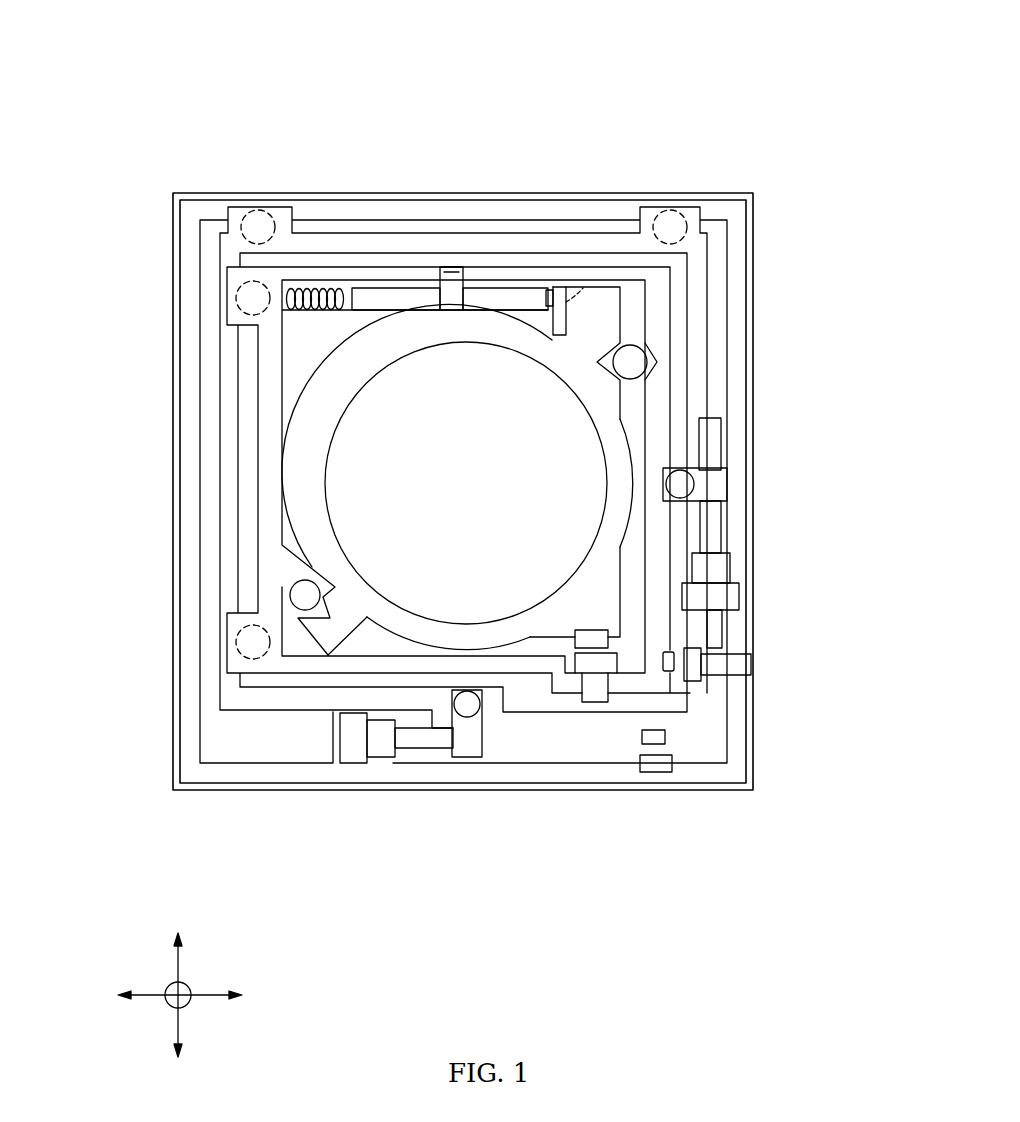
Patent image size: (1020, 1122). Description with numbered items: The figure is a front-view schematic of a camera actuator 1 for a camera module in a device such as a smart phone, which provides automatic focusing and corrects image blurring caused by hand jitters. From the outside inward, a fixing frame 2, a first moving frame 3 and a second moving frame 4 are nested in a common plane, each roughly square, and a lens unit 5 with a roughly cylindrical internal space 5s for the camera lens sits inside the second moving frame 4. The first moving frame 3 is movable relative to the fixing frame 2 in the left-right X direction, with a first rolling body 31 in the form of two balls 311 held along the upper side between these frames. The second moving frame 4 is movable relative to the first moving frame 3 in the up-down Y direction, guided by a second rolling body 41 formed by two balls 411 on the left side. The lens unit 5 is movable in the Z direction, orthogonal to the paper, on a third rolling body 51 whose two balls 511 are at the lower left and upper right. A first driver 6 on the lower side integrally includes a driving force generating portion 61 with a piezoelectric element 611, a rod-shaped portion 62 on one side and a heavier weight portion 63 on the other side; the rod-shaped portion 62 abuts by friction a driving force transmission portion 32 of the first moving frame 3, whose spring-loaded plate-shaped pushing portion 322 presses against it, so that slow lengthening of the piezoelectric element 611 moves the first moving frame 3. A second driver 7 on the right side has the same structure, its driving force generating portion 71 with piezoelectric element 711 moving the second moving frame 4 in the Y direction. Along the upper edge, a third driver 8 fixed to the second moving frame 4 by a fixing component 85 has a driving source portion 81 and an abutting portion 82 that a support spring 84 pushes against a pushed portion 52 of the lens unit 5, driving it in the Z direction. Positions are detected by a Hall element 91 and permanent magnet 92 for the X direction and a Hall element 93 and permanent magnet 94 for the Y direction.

The camera actuator 1 is at (731, 96).
The fixing frame 2 is at (183, 353).
The first moving frame 3 is at (222, 419).
The second moving frame 4 is at (262, 461).
The lens unit 5 is at (300, 504).
The internal space 5s is at (585, 452).
The first driver 6 is at (357, 828).
The second driver 7 is at (715, 522).
The third driver 8 is at (386, 296).
The first rolling body 31 is at (507, 173).
The ball 311 is at (258, 208).
The driving force transmission portion 32 is at (519, 793).
The pushing portion 322 is at (472, 722).
The second rolling body 41 is at (154, 470).
The ball 411 is at (240, 297).
The third rolling body 51 is at (462, 470).
The ball 511 is at (300, 580).
The pushed portion 52 is at (580, 287).
The driving force generating portion 61 is at (348, 801).
The piezoelectric element 611 is at (381, 755).
The rod-shaped portion 62 is at (426, 792).
The weight portion 63 is at (353, 760).
The driving force generating portion 71 is at (787, 581).
The piezoelectric element 711 is at (715, 568).
The driving source portion 81 is at (490, 292).
The abutting portion 82 is at (550, 292).
The support spring 84 is at (313, 290).
The fixing component 85 is at (450, 268).
The Hall element 91 is at (657, 773).
The permanent magnet 92 is at (663, 744).
The Hall element 93 is at (703, 667).
The permanent magnet 94 is at (672, 672).